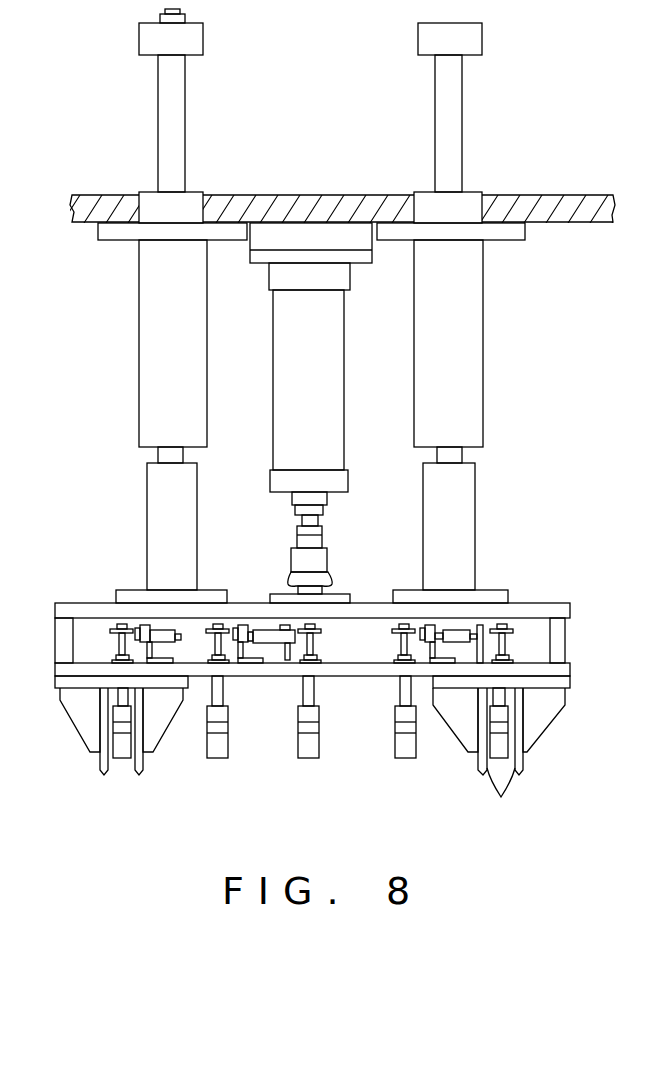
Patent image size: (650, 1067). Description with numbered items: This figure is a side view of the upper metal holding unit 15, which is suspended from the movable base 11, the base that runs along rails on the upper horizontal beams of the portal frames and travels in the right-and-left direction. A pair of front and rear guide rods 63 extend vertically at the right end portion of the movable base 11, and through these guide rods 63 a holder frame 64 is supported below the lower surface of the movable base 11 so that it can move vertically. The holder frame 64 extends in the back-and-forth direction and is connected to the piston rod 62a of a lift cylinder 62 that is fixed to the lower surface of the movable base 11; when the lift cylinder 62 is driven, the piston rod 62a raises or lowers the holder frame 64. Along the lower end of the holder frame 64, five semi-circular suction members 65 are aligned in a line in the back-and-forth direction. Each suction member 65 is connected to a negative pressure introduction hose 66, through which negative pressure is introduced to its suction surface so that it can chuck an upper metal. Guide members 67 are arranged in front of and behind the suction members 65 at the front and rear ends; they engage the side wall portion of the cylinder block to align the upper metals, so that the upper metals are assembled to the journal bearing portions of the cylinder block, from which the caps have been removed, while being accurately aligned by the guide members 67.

The movable base 11 is at (574, 205).
The upper metal holding unit 15 is at (78, 751).
The lift cylinder 62 is at (343, 413).
The piston rod 62a is at (318, 522).
The guide rods 63 is at (178, 135).
The holder frame 64 is at (563, 602).
The suction members 65 is at (397, 723).
The negative pressure introduction hose 66 is at (190, 634).
The guide members 67 is at (500, 797).